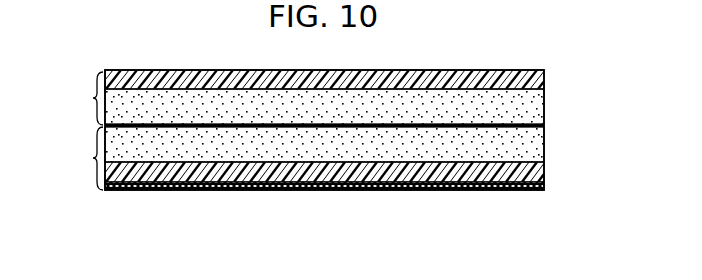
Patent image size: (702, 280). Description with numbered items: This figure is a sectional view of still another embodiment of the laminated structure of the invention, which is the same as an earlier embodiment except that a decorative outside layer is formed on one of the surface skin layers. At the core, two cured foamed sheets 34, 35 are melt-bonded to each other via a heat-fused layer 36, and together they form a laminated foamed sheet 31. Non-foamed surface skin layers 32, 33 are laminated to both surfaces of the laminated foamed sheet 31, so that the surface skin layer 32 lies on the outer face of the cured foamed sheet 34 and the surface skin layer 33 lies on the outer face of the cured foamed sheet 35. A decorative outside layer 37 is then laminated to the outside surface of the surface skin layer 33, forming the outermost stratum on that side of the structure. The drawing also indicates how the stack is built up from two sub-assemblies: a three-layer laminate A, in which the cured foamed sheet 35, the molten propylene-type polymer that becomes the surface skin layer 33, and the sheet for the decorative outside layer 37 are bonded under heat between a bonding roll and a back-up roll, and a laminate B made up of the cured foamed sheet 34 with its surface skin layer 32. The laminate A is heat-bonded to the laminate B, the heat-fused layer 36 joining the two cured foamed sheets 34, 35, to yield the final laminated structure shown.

The laminated foamed sheet 31 is at (354, 139).
The non-foamed surface skin layer 32 is at (544, 80).
The non-foamed surface skin layer 33 is at (546, 172).
The cured foamed sheet 34 is at (536, 98).
The cured foamed sheet 35 is at (536, 143).
The heat-fused layer 36 is at (544, 124).
The decorative outside layer 37 is at (544, 189).
The three-layer laminate A is at (332, 177).
The laminate B is at (334, 88).